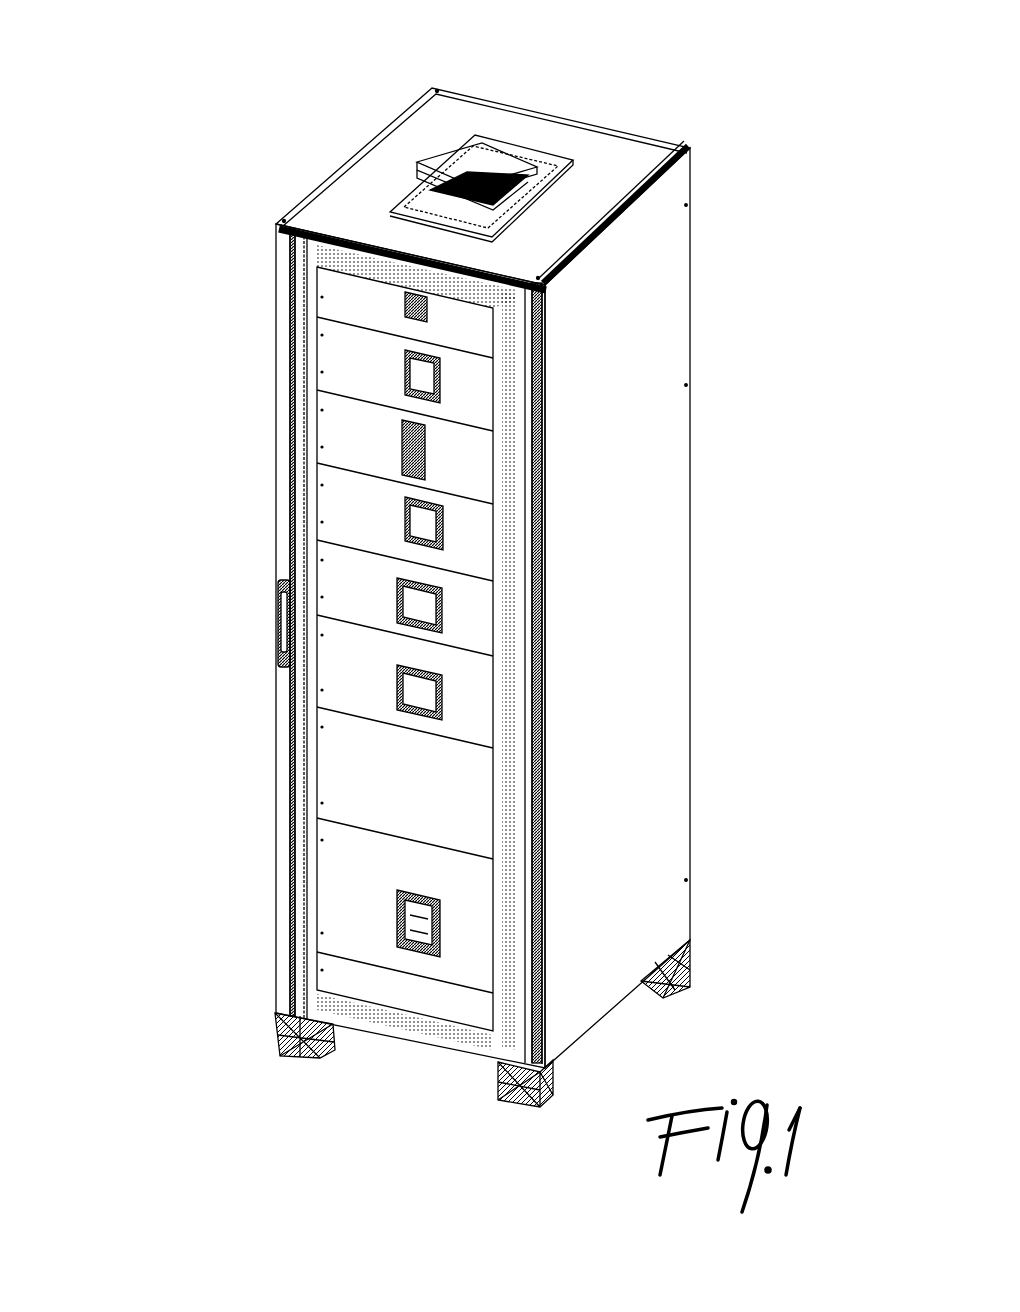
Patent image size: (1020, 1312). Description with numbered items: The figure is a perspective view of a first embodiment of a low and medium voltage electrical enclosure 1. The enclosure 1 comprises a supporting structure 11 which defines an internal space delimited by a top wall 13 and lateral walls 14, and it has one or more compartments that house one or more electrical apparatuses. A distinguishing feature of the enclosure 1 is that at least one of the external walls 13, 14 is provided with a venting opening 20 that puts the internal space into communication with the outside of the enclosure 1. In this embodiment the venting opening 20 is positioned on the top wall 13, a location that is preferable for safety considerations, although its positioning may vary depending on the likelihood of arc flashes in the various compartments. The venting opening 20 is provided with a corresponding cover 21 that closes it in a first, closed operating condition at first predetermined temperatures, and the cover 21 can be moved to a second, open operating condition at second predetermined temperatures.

The low and medium voltage electrical enclosure 1 is at (82, 157).
The supporting structure 11 is at (270, 448).
The top wall 13 is at (633, 167).
The lateral walls 14 is at (663, 293).
The venting opening 20 is at (440, 177).
The cover 21 is at (473, 160).